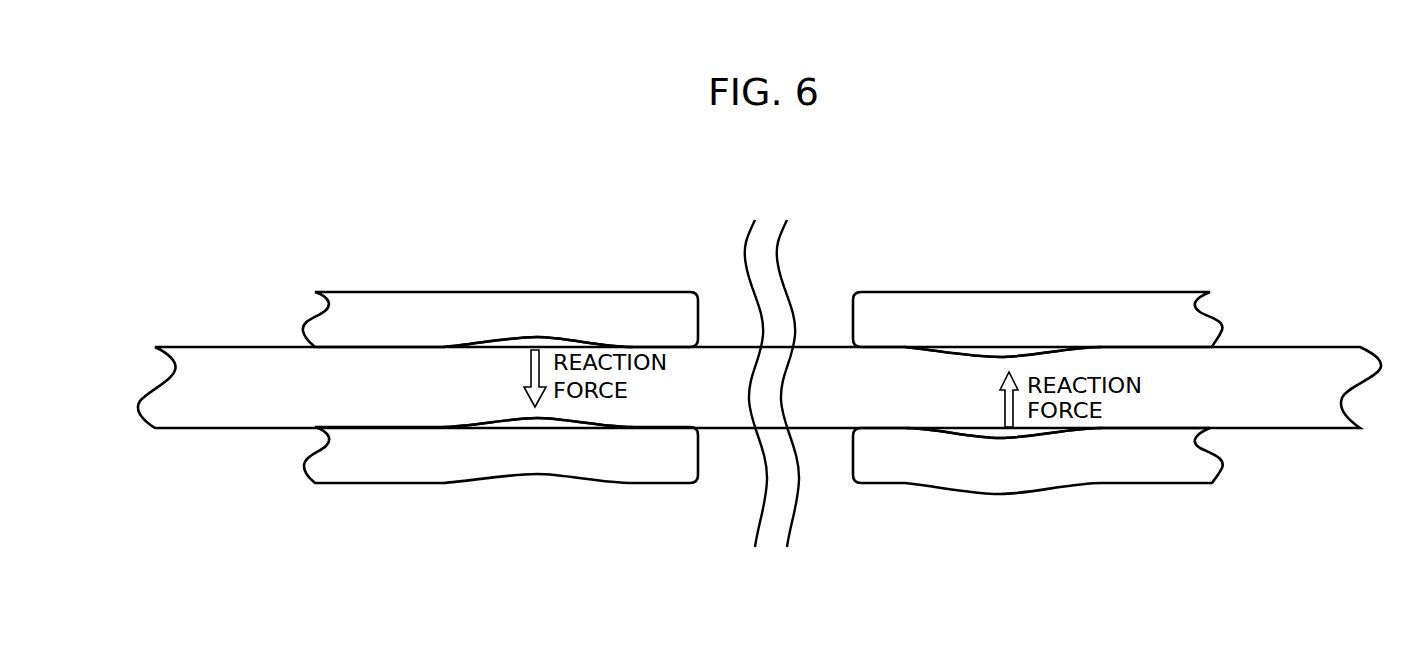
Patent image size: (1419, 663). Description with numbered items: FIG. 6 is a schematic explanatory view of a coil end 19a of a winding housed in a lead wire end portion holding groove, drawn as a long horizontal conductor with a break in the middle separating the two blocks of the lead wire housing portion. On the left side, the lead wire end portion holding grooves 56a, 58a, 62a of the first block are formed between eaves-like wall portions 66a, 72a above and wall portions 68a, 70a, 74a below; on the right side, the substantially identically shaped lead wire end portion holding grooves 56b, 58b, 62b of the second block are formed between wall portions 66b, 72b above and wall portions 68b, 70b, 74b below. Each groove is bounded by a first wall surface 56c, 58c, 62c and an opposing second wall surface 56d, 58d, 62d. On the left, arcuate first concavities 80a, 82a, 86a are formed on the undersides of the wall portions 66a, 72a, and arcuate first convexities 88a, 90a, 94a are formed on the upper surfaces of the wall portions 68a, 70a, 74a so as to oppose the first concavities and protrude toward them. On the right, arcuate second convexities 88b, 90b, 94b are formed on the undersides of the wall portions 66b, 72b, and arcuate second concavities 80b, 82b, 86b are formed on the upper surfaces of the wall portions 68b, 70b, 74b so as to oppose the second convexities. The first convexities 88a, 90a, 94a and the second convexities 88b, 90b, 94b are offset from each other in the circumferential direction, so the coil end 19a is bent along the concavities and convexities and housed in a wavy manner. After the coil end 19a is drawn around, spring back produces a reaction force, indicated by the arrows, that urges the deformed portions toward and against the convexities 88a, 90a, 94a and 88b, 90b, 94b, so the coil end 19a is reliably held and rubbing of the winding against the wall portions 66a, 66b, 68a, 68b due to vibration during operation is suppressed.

The coil end 19a is at (233, 357).
The lead wire end portion holding groove 56a is at (465, 497).
The lead wire end portion holding groove 58a is at (465, 497).
The lead wire end portion holding groove 62a is at (503, 392).
The lead wire end portion holding groove 56b is at (1158, 279).
The lead wire end portion holding groove 58b is at (1158, 279).
The lead wire end portion holding groove 62b is at (1160, 373).
The first wall surface 56c is at (227, 444).
The first wall surface 58c is at (227, 444).
The first wall surface 62c is at (343, 427).
The second wall surface 56d is at (1303, 308).
The second wall surface 58d is at (1303, 308).
The second wall surface 62d is at (1198, 347).
The wall portion 66a is at (500, 295).
The wall portion 72a is at (517, 302).
The wall portion 66b is at (1037, 295).
The wall portion 72b is at (1048, 302).
The wall portion 68a is at (499, 487).
The wall portion 70a is at (499, 487).
The wall portion 74a is at (374, 470).
The wall portion 68b is at (1050, 485).
The wall portion 70b is at (1050, 485).
The wall portion 74b is at (1178, 473).
The first concavity 80a is at (504, 284).
The first concavity 82a is at (504, 284).
The first concavity 86a is at (512, 338).
The second concavity 80b is at (983, 488).
The second concavity 82b is at (983, 488).
The second concavity 86b is at (993, 430).
The first convexity 88a is at (561, 473).
The first convexity 90a is at (561, 473).
The first convexity 94a is at (572, 423).
The second convexity 88b is at (971, 287).
The second convexity 90b is at (971, 287).
The second convexity 94b is at (947, 355).